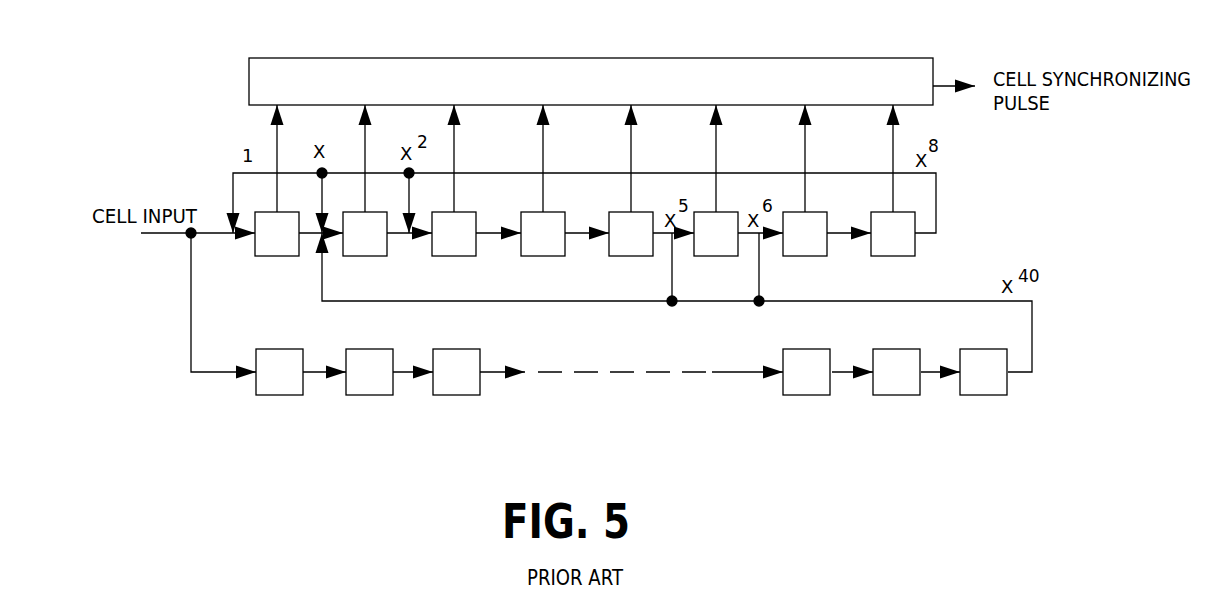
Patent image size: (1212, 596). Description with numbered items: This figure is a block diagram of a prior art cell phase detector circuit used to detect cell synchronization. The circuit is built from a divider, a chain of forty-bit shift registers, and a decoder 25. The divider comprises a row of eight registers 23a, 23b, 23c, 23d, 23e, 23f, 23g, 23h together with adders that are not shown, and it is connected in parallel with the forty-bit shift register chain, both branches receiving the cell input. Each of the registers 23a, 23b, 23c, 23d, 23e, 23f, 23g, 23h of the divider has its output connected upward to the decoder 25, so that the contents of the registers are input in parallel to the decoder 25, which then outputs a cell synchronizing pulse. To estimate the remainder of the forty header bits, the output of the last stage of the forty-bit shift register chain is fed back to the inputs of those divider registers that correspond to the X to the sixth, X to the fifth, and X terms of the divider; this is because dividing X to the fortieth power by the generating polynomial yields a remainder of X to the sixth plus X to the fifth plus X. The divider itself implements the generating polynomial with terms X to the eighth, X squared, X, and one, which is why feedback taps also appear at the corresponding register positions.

The decoder 25 is at (800, 60).
The register 23a is at (278, 256).
The register 23b is at (366, 256).
The register 23c is at (458, 256).
The register 23d is at (546, 256).
The register 23e is at (634, 256).
The register 23f is at (724, 256).
The register 23g is at (810, 256).
The register 23h is at (900, 256).